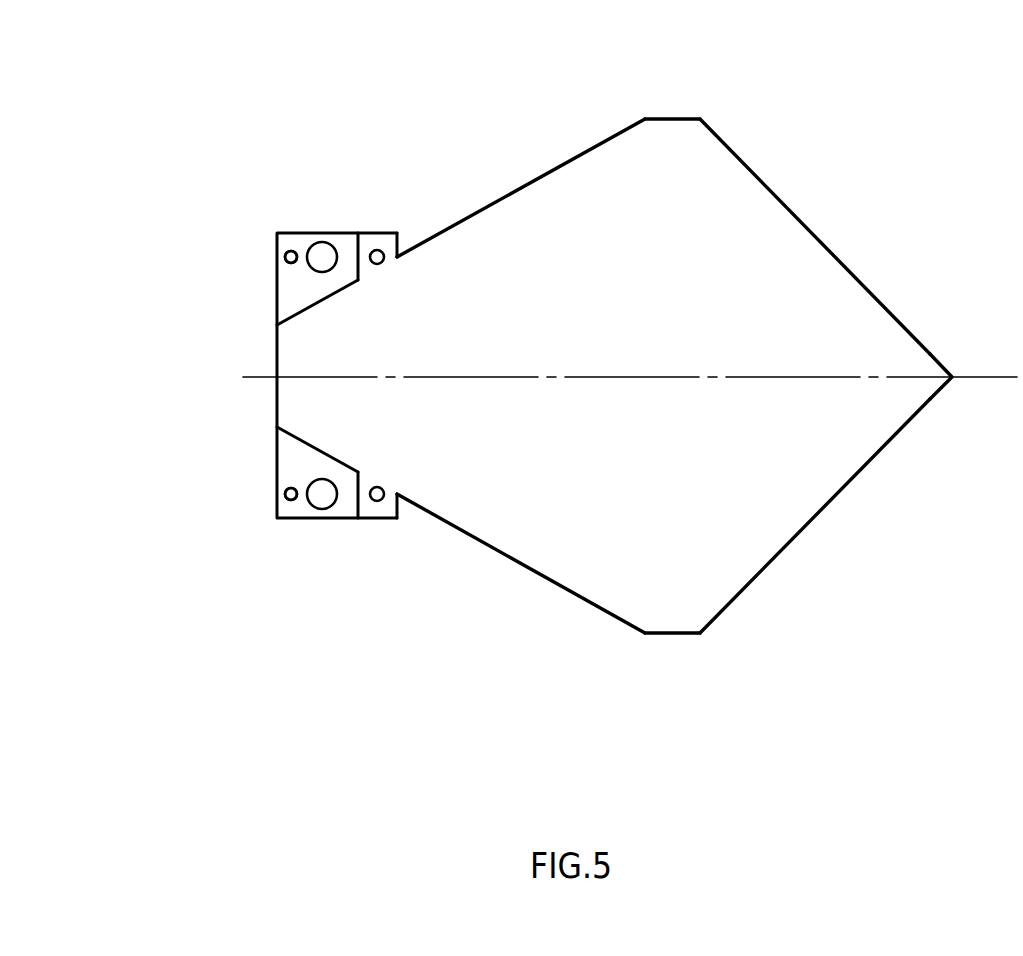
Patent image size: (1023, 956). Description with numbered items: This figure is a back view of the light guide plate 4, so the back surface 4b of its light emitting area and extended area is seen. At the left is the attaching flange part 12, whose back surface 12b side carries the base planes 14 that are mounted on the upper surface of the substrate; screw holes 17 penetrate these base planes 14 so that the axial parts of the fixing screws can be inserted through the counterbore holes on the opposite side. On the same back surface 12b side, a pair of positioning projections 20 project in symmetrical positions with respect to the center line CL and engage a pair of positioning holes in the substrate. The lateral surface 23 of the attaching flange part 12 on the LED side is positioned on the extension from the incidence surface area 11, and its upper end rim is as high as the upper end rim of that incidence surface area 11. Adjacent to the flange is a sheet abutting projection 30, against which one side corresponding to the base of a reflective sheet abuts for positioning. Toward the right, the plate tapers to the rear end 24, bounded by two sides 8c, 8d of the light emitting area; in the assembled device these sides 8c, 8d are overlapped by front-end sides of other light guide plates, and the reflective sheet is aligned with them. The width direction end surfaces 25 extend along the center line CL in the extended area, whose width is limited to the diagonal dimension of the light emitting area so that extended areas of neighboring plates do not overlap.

The light guide plate 4 is at (511, 196).
The back surface 4b is at (685, 391).
The side of light emitting area on rear end side 8d is at (845, 268).
The side of light emitting area on rear end side 8c is at (856, 478).
The rear end 24 is at (952, 380).
The width direction end surface 25 is at (668, 113).
The center line CL is at (1015, 376).
The incidence surface area 11 is at (277, 405).
The attaching flange part 12 is at (368, 233).
The back surface 12b is at (397, 235).
The base plane 14 is at (300, 287).
The screw hole 17 is at (331, 242).
The positioning projection 20 is at (295, 251).
The lateral surface 23 is at (284, 268).
The sheet abutting projection 30 is at (380, 264).